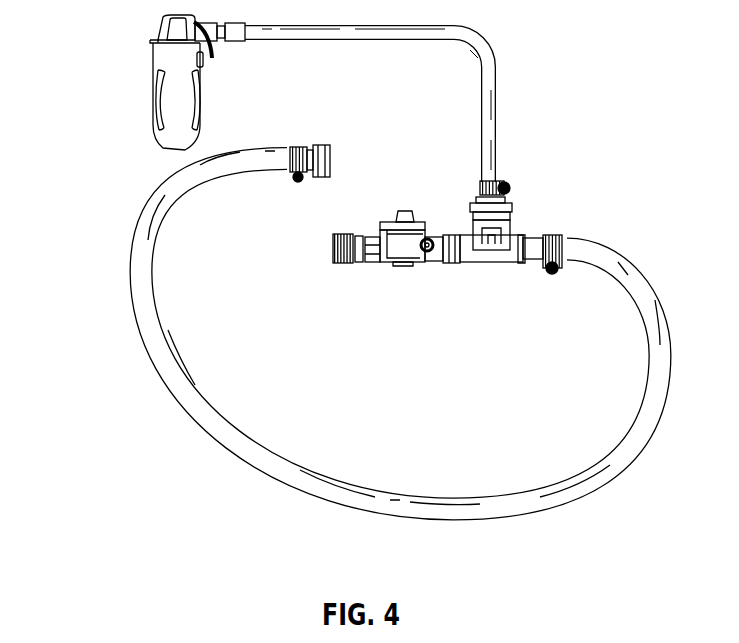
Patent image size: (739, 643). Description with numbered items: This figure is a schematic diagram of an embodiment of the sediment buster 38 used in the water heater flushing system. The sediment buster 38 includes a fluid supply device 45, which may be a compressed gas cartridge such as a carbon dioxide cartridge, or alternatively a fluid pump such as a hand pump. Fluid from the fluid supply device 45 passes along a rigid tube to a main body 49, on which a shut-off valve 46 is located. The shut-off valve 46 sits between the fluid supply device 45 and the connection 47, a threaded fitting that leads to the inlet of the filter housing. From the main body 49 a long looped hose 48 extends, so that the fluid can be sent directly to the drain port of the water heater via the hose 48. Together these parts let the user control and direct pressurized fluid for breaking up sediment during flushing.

The sediment buster 38 is at (555, 111).
The fluid supply device 45 is at (172, 107).
The shut-off valve 46 is at (407, 207).
The connection 47 is at (353, 262).
The hose 48 is at (143, 310).
The main body 49 is at (413, 247).